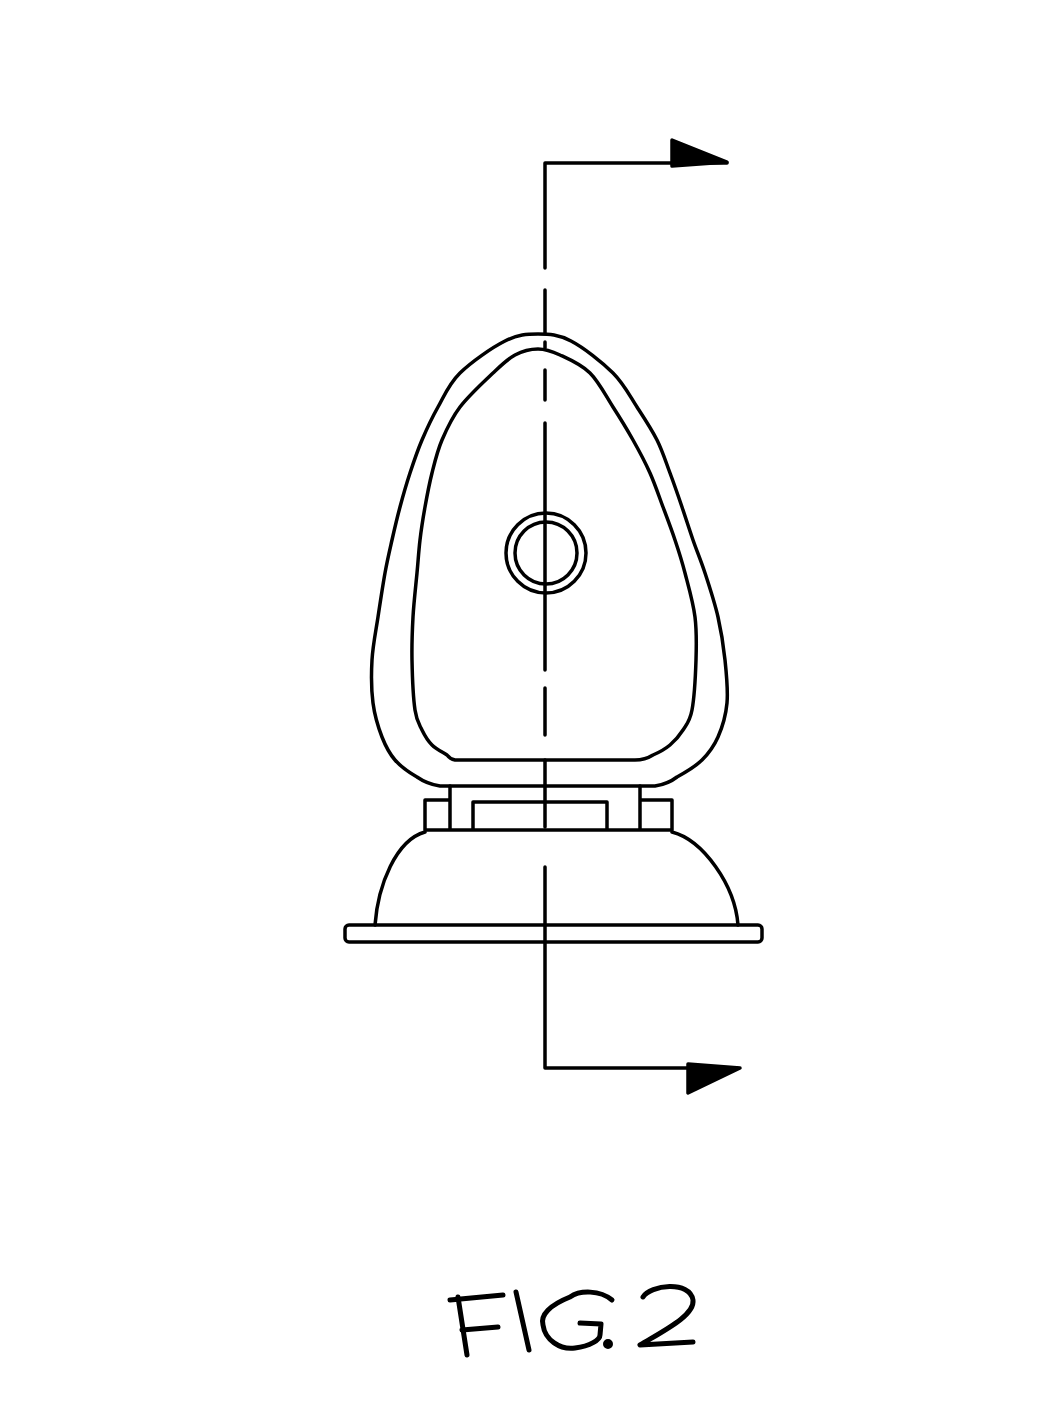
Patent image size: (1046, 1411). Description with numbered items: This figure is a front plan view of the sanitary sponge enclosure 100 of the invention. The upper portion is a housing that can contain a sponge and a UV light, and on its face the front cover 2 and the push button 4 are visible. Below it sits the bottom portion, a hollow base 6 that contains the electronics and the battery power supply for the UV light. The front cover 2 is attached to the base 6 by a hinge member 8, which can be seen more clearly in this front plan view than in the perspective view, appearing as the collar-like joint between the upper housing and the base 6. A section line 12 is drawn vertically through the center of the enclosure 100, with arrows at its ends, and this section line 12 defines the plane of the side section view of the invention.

The sanitary sponge enclosure 100 is at (405, 264).
The front cover 2 is at (613, 485).
The push button 4 is at (562, 560).
The hinge member 8 is at (650, 810).
The base 6 is at (692, 892).
The section line 12 is at (580, 163).